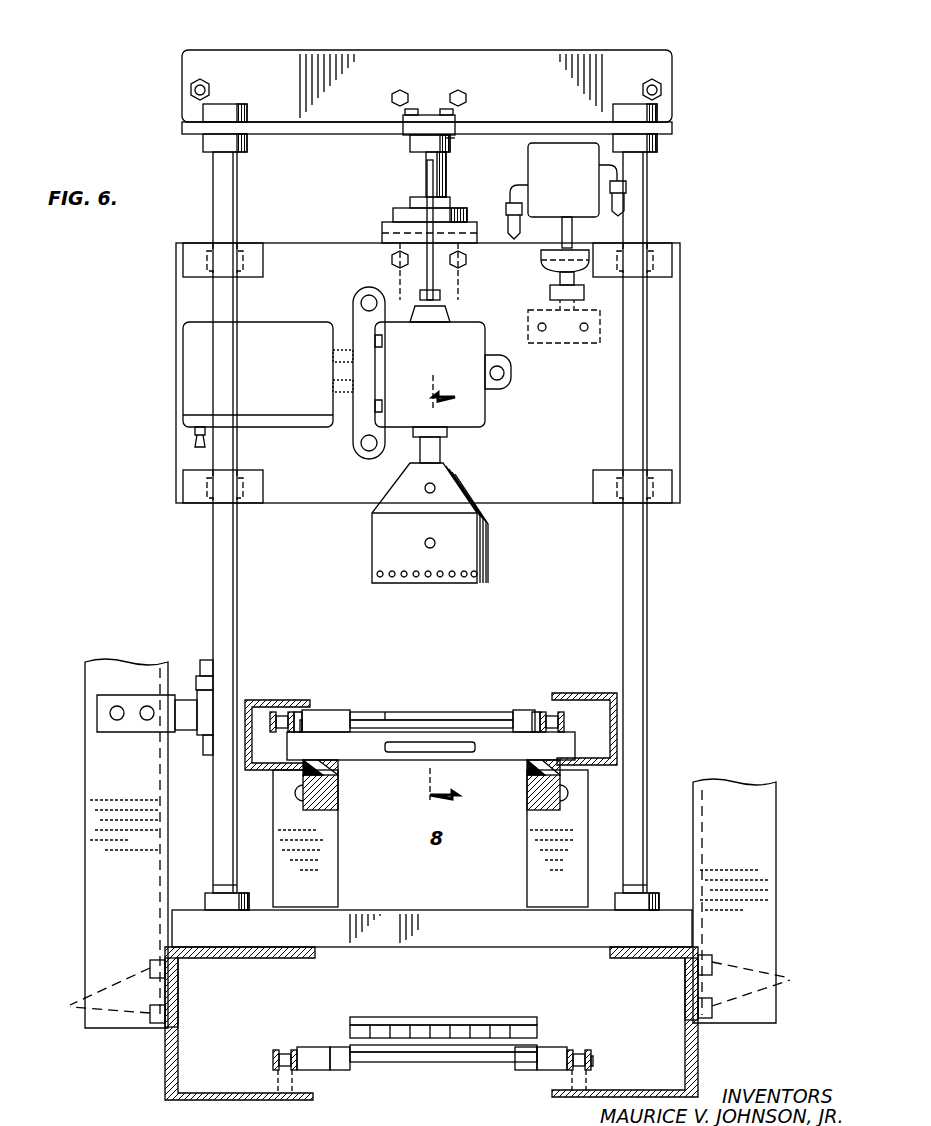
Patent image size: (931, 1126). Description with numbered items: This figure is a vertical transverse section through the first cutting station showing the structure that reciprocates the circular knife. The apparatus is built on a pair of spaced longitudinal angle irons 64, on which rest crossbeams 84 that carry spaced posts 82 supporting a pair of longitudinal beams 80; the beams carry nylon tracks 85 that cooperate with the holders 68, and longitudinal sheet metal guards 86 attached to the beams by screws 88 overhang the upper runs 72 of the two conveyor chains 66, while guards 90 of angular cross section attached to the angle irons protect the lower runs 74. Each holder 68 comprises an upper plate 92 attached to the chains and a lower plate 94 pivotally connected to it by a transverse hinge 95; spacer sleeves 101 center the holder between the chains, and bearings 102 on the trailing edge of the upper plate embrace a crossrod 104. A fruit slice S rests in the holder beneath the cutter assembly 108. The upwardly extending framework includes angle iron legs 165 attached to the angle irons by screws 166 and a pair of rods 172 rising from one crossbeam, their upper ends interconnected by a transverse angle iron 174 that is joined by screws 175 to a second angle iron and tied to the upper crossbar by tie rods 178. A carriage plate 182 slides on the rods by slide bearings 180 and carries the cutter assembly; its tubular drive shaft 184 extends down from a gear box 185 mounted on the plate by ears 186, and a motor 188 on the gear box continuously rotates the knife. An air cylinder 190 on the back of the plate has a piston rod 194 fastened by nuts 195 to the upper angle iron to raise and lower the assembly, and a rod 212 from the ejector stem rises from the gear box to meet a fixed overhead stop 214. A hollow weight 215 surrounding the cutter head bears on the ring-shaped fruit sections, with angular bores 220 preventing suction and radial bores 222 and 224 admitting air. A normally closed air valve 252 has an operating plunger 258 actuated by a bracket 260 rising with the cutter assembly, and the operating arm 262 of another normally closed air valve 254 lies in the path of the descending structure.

The transverse angle iron 174 is at (515, 58).
The screws 175 is at (458, 88).
The tie rods 178 is at (190, 91).
The rods 172 is at (214, 578).
The slide bearings 180 is at (255, 265).
The plate 182 is at (578, 421).
The fixed overhead stop 214 is at (403, 132).
The piston rod 194 is at (447, 165).
The rod 212 is at (427, 182).
The nuts 195 is at (448, 138).
The air cylinder 190 is at (468, 284).
The normally closed air valve 252 is at (565, 160).
The operating plunger 258 is at (572, 240).
The bracket 260 is at (536, 306).
The motor 188 is at (268, 370).
The ears 186 is at (362, 292).
The gear box 185 is at (446, 362).
The tubular drive shaft 184 is at (442, 450).
The cutter assembly 108 is at (520, 522).
The hollow weight 215 is at (490, 552).
The radial bore 224 is at (424, 488).
The radial bore 222 is at (424, 545).
The angular bores 220 is at (418, 576).
The sheet metal guards 86 is at (265, 700).
The conveyor chains 66 is at (330, 660).
The bearings 102 is at (350, 712).
The crossrod 104 is at (425, 712).
The upper plate 92 is at (448, 722).
The fruit slice S is at (389, 714).
The lower plate 94 is at (505, 760).
The holders 68 is at (400, 780).
The nylon tracks 85 is at (328, 772).
The longitudinal beams 80 is at (330, 800).
The screws 88 is at (300, 795).
The posts 82 is at (330, 897).
The upper runs 72 is at (292, 732).
The crossbeams 84 is at (320, 940).
The sheet metal guards 90 is at (168, 1070).
The longitudinal angle irons 64 is at (180, 995).
The screws 166 is at (428, 989).
The angle iron legs 165 is at (100, 795).
The operating arm 262 is at (206, 660).
The normally closed air valve 254 is at (205, 745).
The spacer sleeves 101 is at (318, 1047).
The transverse hinge 95 is at (460, 1025).
The lower runs 74 is at (592, 1062).